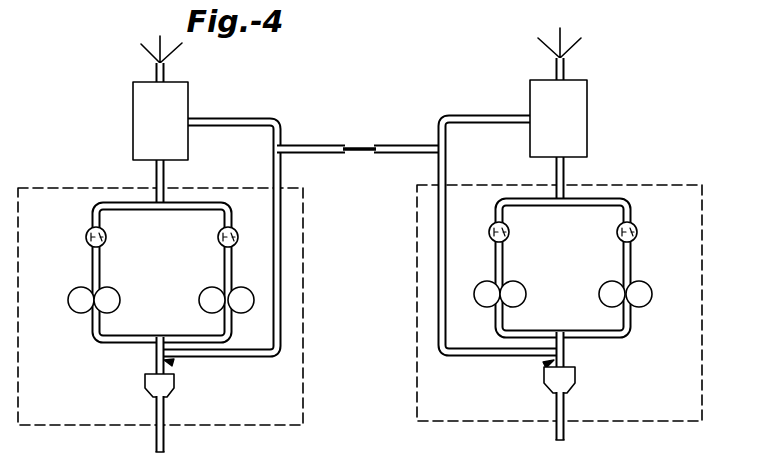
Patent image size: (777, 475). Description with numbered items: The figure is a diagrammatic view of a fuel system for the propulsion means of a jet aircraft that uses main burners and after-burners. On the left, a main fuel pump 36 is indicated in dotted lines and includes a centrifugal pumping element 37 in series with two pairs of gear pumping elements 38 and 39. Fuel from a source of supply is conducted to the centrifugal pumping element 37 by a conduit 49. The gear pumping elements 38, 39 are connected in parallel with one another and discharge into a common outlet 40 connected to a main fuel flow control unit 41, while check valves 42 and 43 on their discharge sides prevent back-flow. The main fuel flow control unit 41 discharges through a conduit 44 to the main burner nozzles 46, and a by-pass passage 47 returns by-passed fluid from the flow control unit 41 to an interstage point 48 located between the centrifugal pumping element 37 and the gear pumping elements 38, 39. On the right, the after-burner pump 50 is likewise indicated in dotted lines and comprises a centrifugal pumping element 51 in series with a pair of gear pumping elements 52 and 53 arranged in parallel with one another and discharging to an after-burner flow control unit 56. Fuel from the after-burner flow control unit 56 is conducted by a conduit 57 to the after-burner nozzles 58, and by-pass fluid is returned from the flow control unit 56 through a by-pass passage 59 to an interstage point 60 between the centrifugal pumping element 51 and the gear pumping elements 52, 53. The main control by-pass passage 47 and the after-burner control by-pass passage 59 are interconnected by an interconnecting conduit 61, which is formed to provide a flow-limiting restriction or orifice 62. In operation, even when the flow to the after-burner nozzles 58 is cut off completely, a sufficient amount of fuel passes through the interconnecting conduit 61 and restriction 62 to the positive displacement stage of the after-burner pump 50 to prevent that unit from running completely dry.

The main fuel pump 36 is at (18, 425).
The centrifugal pumping element 37 is at (162, 383).
The gear pumping elements 38 is at (83, 298).
The gear pumping elements 39 is at (241, 298).
The common outlet 40 is at (165, 176).
The main fuel flow control unit 41 is at (132, 112).
The check valve 42 is at (106, 237).
The check valve 43 is at (238, 236).
The conduit 44 is at (166, 73).
The main burner nozzles 46 is at (158, 63).
The by-pass passage 47 is at (283, 237).
The interstage point 48 is at (170, 362).
The conduit 49 is at (165, 438).
The after-burner pump 50 is at (633, 422).
The centrifugal pumping element 51 is at (570, 380).
The gear pumping element 52 is at (488, 293).
The gear pumping element 53 is at (639, 293).
The after-burner flow control unit 56 is at (568, 114).
The conduit 57 is at (567, 68).
The after-burner nozzles 58 is at (566, 57).
The by-pass passage 59 is at (437, 250).
The interstage point 60 is at (547, 364).
The interconnecting conduit 61 is at (349, 116).
The flow-limiting restriction 62 is at (360, 147).